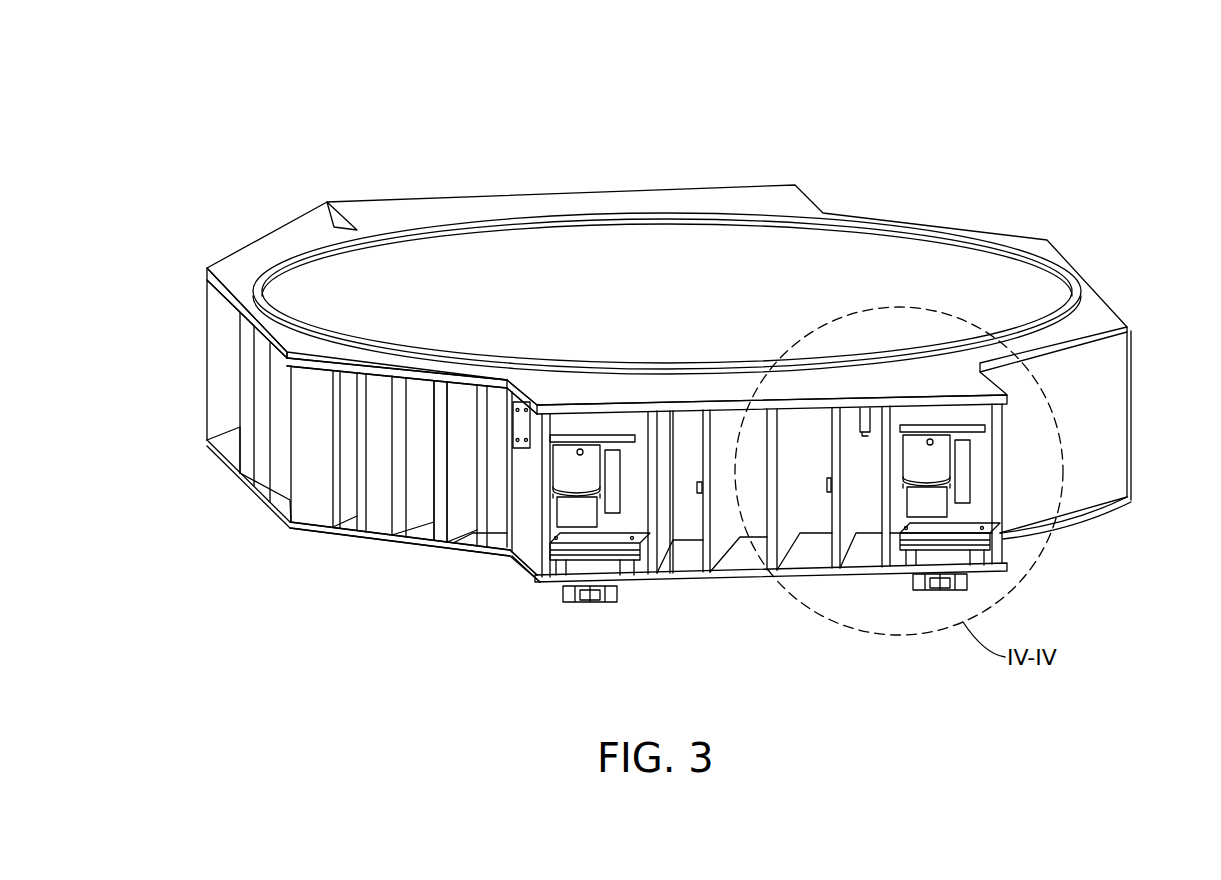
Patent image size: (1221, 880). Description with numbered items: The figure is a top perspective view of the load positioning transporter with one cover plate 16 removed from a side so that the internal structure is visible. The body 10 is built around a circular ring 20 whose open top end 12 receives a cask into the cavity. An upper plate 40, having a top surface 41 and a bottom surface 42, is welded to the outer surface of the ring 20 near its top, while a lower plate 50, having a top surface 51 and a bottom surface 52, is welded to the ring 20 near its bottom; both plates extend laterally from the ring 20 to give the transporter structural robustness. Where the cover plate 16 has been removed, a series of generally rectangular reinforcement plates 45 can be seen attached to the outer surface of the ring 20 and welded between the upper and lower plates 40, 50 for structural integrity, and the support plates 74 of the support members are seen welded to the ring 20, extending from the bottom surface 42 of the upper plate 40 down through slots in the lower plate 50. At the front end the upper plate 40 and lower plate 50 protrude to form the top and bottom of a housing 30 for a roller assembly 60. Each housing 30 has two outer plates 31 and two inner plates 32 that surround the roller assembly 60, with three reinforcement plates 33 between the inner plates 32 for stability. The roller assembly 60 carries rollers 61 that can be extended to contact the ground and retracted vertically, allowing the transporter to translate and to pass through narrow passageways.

The body 10 is at (1138, 350).
The open top end 12 is at (995, 268).
The cover plate 16 is at (1098, 413).
The ring 20 is at (912, 238).
The housing 30 is at (1014, 482).
The outer plate 31 is at (530, 547).
The inner plate 32 is at (653, 553).
The reinforcement plate 33 is at (710, 553).
The upper plate 40 is at (223, 285).
The top surface 41 is at (315, 342).
The bottom surface 42 is at (337, 378).
The reinforcement plate 45 is at (250, 388).
The lower plate 50 is at (334, 540).
The top surface 51 is at (338, 522).
The bottom surface 52 is at (487, 553).
The roller assembly 60 is at (565, 610).
The roller 61 is at (592, 593).
The support plate 74 is at (457, 510).